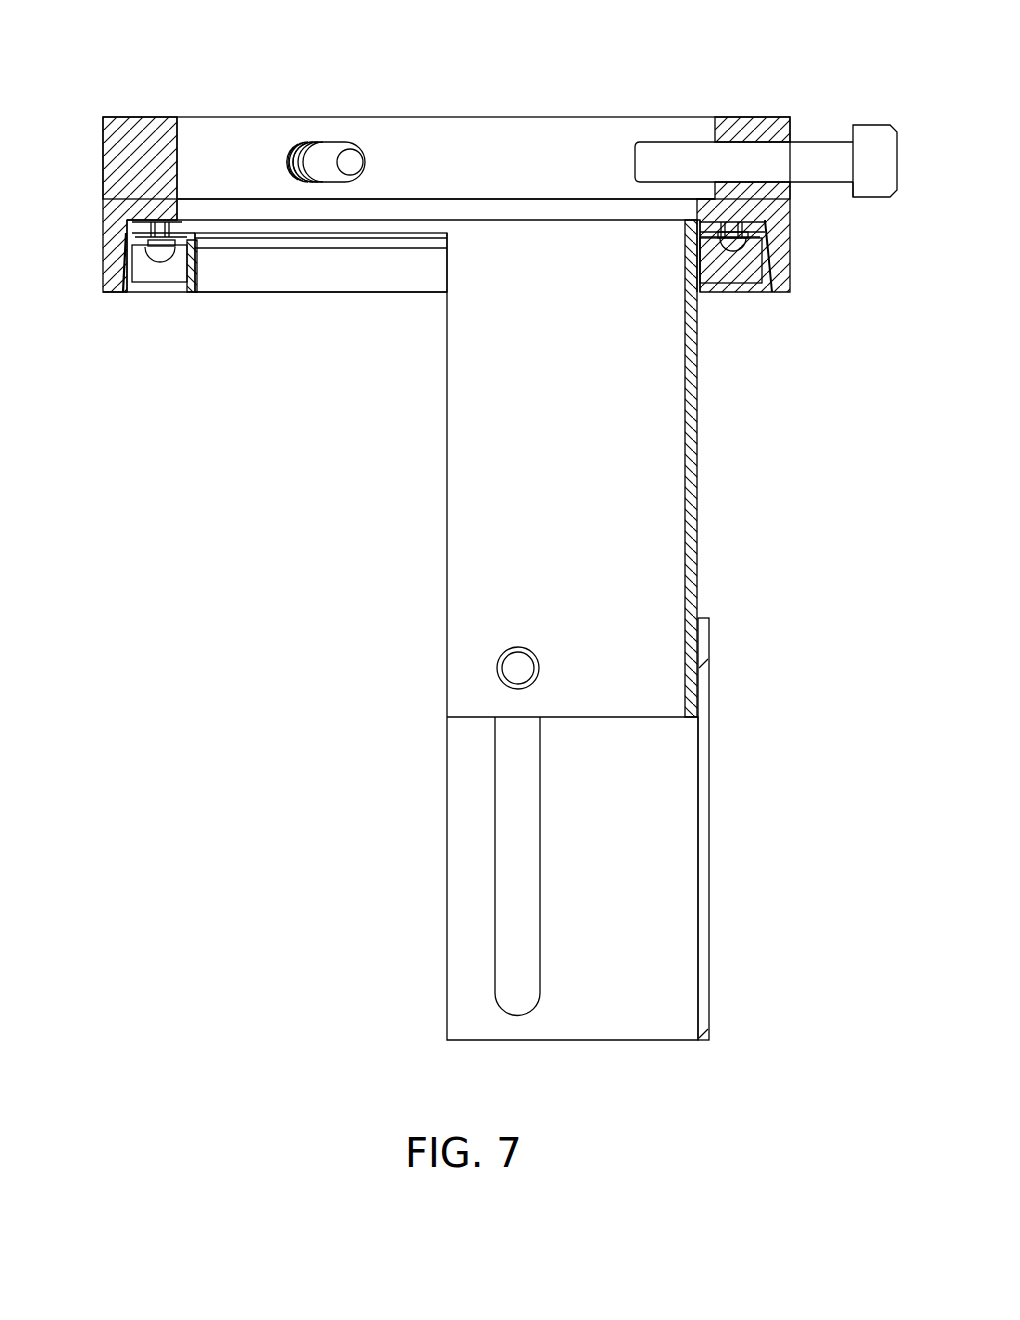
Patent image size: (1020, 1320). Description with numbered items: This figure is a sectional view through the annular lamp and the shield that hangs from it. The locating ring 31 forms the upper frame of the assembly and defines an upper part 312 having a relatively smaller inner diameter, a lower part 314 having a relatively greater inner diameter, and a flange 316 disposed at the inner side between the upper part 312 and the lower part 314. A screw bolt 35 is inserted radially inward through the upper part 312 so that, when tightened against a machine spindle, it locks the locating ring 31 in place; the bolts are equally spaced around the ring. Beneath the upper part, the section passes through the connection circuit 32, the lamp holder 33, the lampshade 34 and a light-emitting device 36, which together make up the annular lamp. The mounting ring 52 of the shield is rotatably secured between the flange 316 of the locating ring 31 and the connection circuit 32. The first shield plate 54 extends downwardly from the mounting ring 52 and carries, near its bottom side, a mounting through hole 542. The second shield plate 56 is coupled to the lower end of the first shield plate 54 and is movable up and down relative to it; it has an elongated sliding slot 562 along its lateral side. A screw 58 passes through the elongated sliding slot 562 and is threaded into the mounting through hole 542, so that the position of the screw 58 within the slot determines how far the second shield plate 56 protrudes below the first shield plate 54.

The locating ring 31 is at (101, 137).
The upper part 312 is at (131, 140).
The lower part 314 is at (113, 285).
The flange 316 is at (188, 205).
The connection circuit 32 is at (140, 230).
The lamp holder 33 is at (140, 260).
The lampshade 34 is at (197, 270).
The screw bolt 35 is at (330, 140).
The light-emitting device 36 is at (160, 262).
The mounting ring 52 is at (235, 225).
The first shield plate 54 is at (697, 463).
The mounting through hole 542 is at (505, 650).
The second shield plate 56 is at (714, 818).
The elongated sliding slot 562 is at (538, 1003).
The screw 58 is at (513, 668).